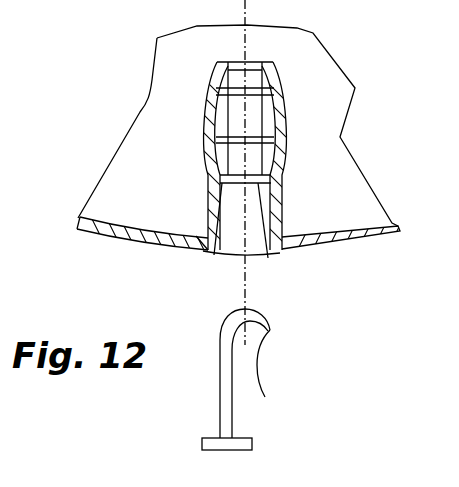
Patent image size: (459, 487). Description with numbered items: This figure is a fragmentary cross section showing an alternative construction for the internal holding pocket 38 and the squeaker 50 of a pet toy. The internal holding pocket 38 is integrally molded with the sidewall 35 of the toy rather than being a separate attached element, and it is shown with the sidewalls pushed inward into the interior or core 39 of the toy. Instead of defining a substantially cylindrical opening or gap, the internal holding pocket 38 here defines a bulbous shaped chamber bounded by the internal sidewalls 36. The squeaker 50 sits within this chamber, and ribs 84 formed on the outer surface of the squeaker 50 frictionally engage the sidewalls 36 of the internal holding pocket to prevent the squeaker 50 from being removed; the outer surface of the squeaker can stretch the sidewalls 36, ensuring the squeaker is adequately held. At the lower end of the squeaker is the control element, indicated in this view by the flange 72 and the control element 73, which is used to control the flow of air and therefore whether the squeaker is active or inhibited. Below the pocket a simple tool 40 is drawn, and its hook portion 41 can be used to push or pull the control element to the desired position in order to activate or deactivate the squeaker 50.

The sidewall 35 is at (142, 242).
The internal sidewalls 36 is at (211, 104).
The internal holding pocket 38 is at (230, 264).
The core 39 is at (156, 201).
The tool 40 is at (222, 403).
The hook portion 41 is at (255, 365).
The squeaker 50 is at (236, 116).
The flange 72 is at (280, 254).
The control element 73 is at (265, 250).
The ribs 84 is at (220, 90).